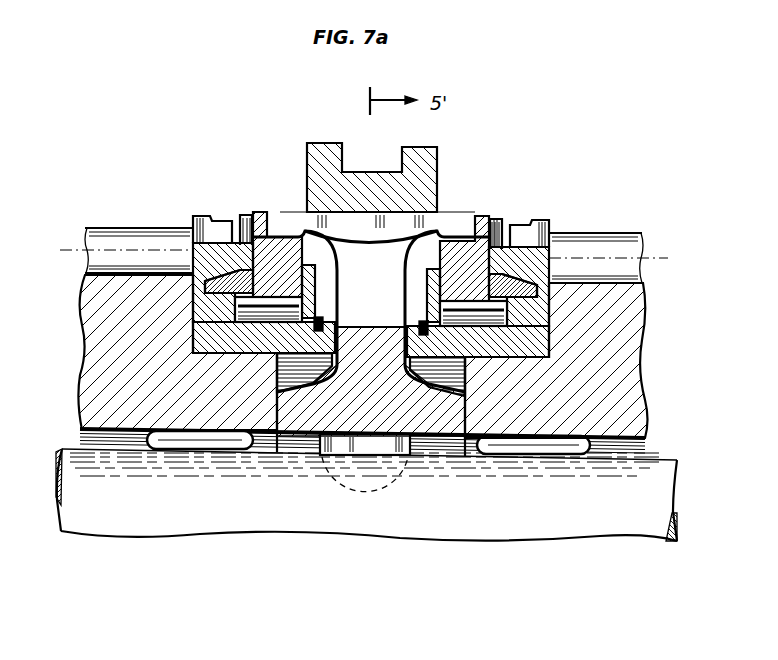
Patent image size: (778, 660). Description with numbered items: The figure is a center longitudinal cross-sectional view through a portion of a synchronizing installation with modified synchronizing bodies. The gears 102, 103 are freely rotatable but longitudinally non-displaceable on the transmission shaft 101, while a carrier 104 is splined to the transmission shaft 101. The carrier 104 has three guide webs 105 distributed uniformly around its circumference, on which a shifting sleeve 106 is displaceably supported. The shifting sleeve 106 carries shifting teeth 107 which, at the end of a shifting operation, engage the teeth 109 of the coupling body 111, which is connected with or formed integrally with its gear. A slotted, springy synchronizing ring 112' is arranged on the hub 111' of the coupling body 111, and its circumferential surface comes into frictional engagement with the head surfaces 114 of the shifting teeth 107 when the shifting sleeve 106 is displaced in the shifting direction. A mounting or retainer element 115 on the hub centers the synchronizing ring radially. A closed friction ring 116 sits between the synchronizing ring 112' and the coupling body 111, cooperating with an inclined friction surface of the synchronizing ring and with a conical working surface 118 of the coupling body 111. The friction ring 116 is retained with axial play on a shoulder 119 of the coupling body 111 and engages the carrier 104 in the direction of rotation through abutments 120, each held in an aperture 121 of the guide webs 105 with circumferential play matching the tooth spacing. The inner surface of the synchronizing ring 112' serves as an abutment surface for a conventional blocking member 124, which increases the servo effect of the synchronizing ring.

The transmission shaft 101 is at (320, 526).
The gear 102 is at (95, 350).
The gear 103 is at (623, 337).
The carrier 104 is at (300, 447).
The guide webs 105 is at (293, 210).
The shifting sleeve 106 is at (358, 179).
The shifting teeth 107 is at (366, 247).
The teeth 109 is at (193, 218).
The coupling body 111 is at (374, 294).
The hub 111' is at (466, 406).
The synchronizing ring 112' is at (366, 239).
The head surfaces 114 is at (406, 224).
The mounting or retainer element 115 is at (418, 302).
The friction ring 116 is at (203, 292).
The conical working surface 118 is at (203, 263).
The shoulder 119 is at (505, 329).
The abutments 120 is at (240, 220).
The aperture 121 is at (505, 214).
The blocking member 124 is at (262, 313).